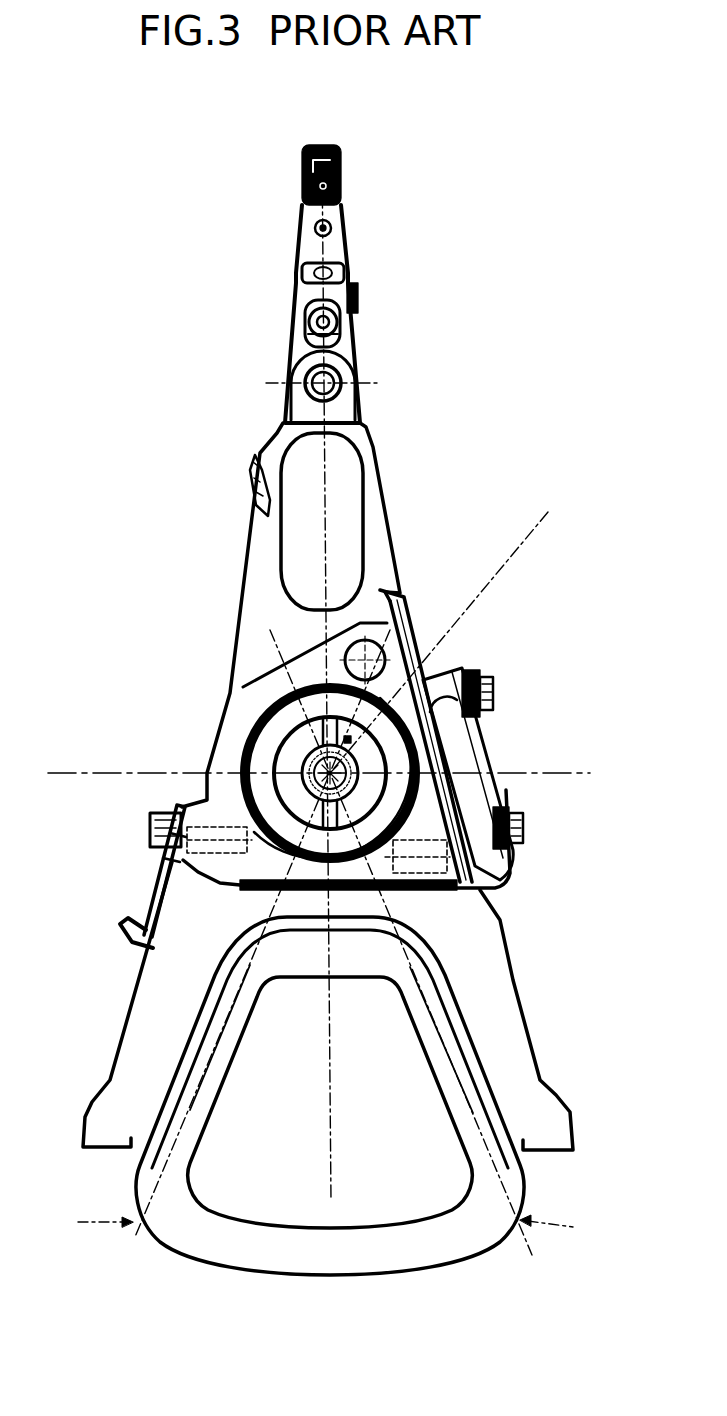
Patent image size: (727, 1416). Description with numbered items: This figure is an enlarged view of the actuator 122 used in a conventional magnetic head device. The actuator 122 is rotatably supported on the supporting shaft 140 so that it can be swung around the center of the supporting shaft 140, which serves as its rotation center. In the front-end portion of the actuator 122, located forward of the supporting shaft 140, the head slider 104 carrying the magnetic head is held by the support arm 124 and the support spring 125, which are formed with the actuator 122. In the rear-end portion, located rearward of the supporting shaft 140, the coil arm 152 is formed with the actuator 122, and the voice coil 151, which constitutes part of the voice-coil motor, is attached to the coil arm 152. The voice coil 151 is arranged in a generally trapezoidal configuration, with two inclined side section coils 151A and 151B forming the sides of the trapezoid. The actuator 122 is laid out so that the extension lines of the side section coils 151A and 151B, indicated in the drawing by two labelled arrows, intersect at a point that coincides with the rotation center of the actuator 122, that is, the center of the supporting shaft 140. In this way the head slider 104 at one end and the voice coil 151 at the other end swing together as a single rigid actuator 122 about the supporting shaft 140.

The actuator 122 is at (346, 108).
The head slider 104 is at (341, 165).
The support spring 125 is at (344, 238).
The support arm 124 is at (384, 497).
The supporting shaft 140 is at (300, 756).
The coil arm 152 is at (493, 973).
The voice coil 151 is at (334, 1128).
The side section coil 151A is at (470, 1070).
The side section coil 151B is at (193, 1060).